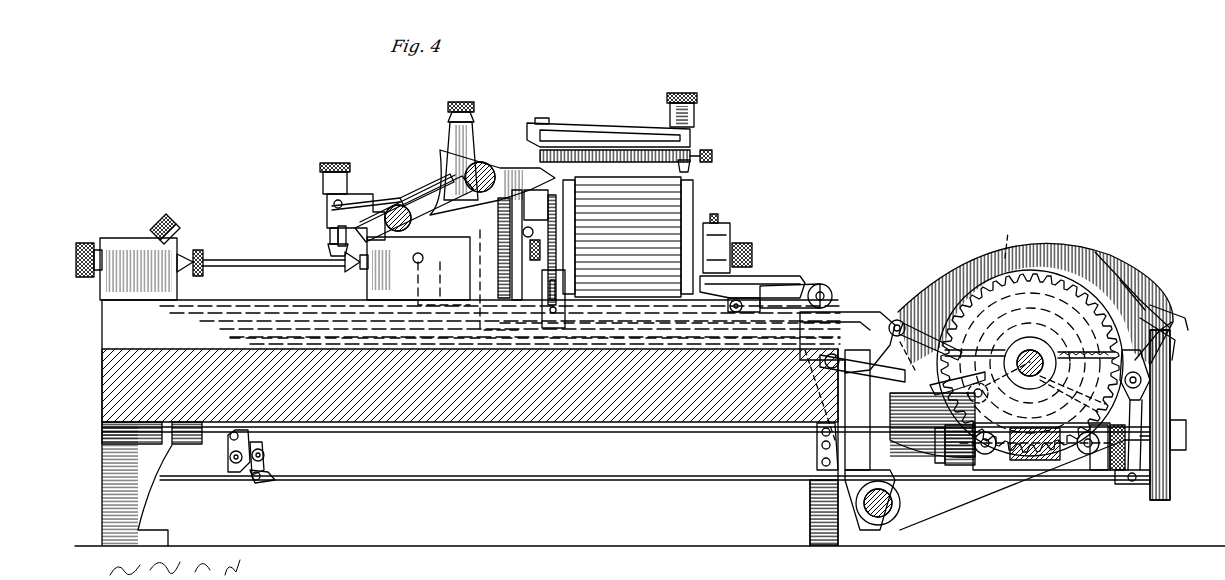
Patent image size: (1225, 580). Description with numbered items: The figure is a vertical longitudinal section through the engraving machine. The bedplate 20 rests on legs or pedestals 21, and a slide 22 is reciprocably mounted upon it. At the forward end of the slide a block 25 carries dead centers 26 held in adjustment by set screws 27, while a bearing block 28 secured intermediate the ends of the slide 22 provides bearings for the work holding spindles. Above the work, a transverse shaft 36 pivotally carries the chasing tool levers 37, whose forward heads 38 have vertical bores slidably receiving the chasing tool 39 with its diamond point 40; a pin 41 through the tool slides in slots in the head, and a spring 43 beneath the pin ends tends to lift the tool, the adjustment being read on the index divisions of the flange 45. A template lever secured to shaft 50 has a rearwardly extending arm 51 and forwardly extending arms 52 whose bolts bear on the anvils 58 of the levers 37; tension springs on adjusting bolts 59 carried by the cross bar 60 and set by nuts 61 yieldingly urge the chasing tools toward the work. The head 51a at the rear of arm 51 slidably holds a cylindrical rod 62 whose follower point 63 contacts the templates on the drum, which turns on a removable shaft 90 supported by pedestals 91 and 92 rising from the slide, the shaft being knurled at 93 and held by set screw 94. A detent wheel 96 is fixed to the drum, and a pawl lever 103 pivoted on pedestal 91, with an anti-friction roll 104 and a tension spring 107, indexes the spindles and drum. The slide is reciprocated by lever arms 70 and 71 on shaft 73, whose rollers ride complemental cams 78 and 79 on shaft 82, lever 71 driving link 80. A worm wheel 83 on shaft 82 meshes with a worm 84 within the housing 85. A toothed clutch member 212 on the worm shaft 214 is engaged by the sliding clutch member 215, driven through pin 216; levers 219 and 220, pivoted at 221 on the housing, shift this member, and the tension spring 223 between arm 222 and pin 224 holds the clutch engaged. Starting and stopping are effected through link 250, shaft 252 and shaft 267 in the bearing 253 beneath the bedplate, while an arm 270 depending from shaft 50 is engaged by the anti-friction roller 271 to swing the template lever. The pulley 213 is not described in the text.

The bedplate 20 is at (430, 425).
The legs or pedestals 21 is at (150, 497).
The slide 22 is at (276, 300).
The block 25 is at (120, 248).
The dead centers 26 is at (188, 255).
The set screws 27 is at (170, 220).
The bearing block 28 is at (372, 284).
The shaft 36 is at (396, 206).
The chasing tool levers 37 is at (370, 195).
The head 38 is at (330, 228).
The chasing tool 39 is at (328, 248).
The diamond point 40 is at (340, 262).
The pin 41 is at (335, 207).
The spring 43 is at (330, 204).
The flange 45 is at (334, 163).
The shaft 50 is at (450, 185).
The rearwardly extending arm 51 is at (582, 140).
The head 51a is at (696, 136).
The forwardly extending arms 52 is at (372, 190).
The anvils / tension springs 58 is at (472, 165).
The adjusting bolts 59 is at (468, 135).
The cross bar 60 is at (448, 150).
The nuts 61 is at (461, 102).
The cylindrical rod 62 is at (714, 158).
The follower point 63 is at (692, 168).
The lever arm 70 is at (915, 498).
The lever arm 71 is at (852, 312).
The shaft 73 is at (885, 523).
The cam 78 is at (1152, 305).
The cam 79 is at (935, 270).
The link 80 is at (818, 284).
The shaft 82 is at (1022, 350).
The worm wheel 83 is at (1030, 339).
The worm 84 is at (1035, 470).
The housing 85 is at (1095, 285).
The removable shaft 90 is at (755, 252).
The pedestal 91 is at (605, 248).
The pedestal 92 is at (730, 225).
The knurled end 93 is at (741, 244).
The set screw 94 is at (718, 215).
The detent wheel 96 is at (528, 215).
The pawl lever 103 is at (550, 230).
The anti-friction roll 104 is at (545, 248).
The tension spring 107 is at (566, 305).
The toothed clutch member 212 is at (1135, 486).
The pulley 213 is at (1162, 400).
The shaft 214 is at (1060, 470).
The clutch member 215 is at (1118, 480).
The pin 216 is at (1100, 470).
The lever 219 is at (1060, 398).
The lever 220 is at (1152, 322).
The pivot 221 is at (1148, 370).
The upwardly extending arm 222 is at (1146, 284).
The tension spring 223 is at (1034, 352).
The pin 224 is at (1072, 392).
The link 250 is at (540, 440).
The shaft 252 is at (230, 462).
The bearing 253 is at (266, 448).
The shaft 267 is at (270, 466).
The arm 270 is at (330, 329).
The anti-friction roller 271 is at (478, 310).